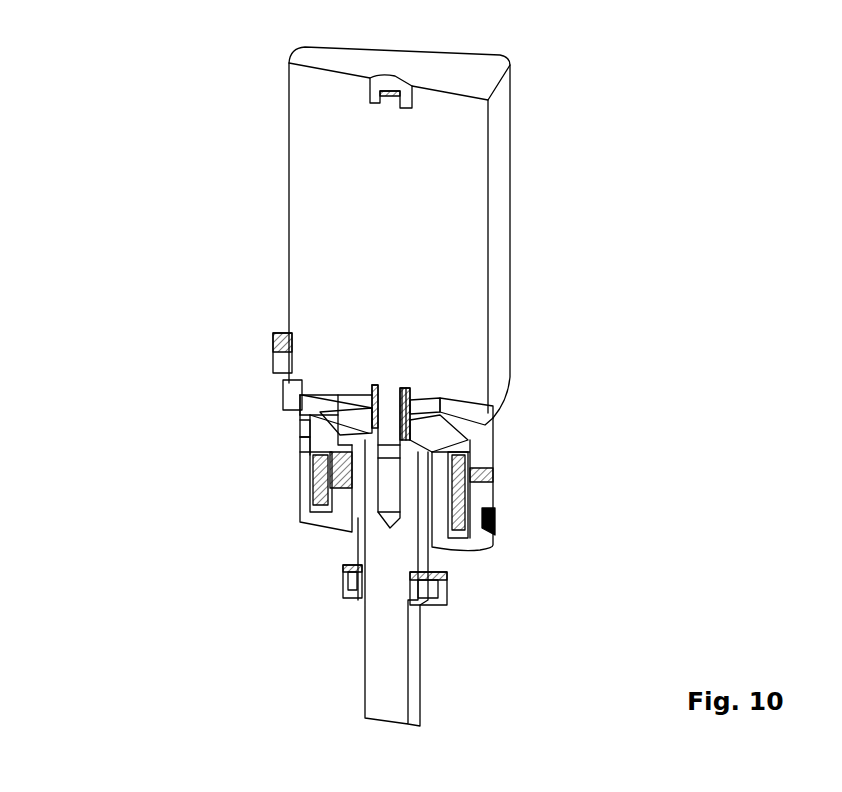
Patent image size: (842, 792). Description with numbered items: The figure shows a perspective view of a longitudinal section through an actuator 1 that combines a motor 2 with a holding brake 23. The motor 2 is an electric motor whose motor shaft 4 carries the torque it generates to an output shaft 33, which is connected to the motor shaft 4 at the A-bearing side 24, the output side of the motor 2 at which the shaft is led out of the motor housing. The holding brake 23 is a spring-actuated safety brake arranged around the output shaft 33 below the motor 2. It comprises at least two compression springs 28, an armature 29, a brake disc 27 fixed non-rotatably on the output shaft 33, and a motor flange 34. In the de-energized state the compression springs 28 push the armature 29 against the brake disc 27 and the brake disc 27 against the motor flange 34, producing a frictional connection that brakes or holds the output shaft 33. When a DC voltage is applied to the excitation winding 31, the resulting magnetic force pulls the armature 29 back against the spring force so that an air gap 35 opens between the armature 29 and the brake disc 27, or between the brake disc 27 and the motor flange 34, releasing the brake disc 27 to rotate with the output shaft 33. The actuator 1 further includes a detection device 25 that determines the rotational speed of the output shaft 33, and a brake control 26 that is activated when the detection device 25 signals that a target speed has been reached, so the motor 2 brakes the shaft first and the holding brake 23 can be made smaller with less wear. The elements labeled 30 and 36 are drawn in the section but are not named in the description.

The actuator 1 is at (575, 281).
The motor 2 is at (307, 183).
The motor shaft 4 is at (393, 451).
The holding brake 23 is at (575, 223).
The A-bearing side 24 is at (165, 397).
The detection device 25 is at (288, 557).
The brake control 26 is at (513, 546).
The brake disc 27 is at (480, 432).
The compression springs 28 is at (480, 480).
The armature 29 is at (300, 437).
The central column 30 is at (367, 415).
The excitation winding 31 is at (480, 498).
The output shaft 33 is at (395, 685).
The motor flange 34 is at (283, 388).
The air gap 35 is at (290, 421).
The window 36 is at (302, 522).